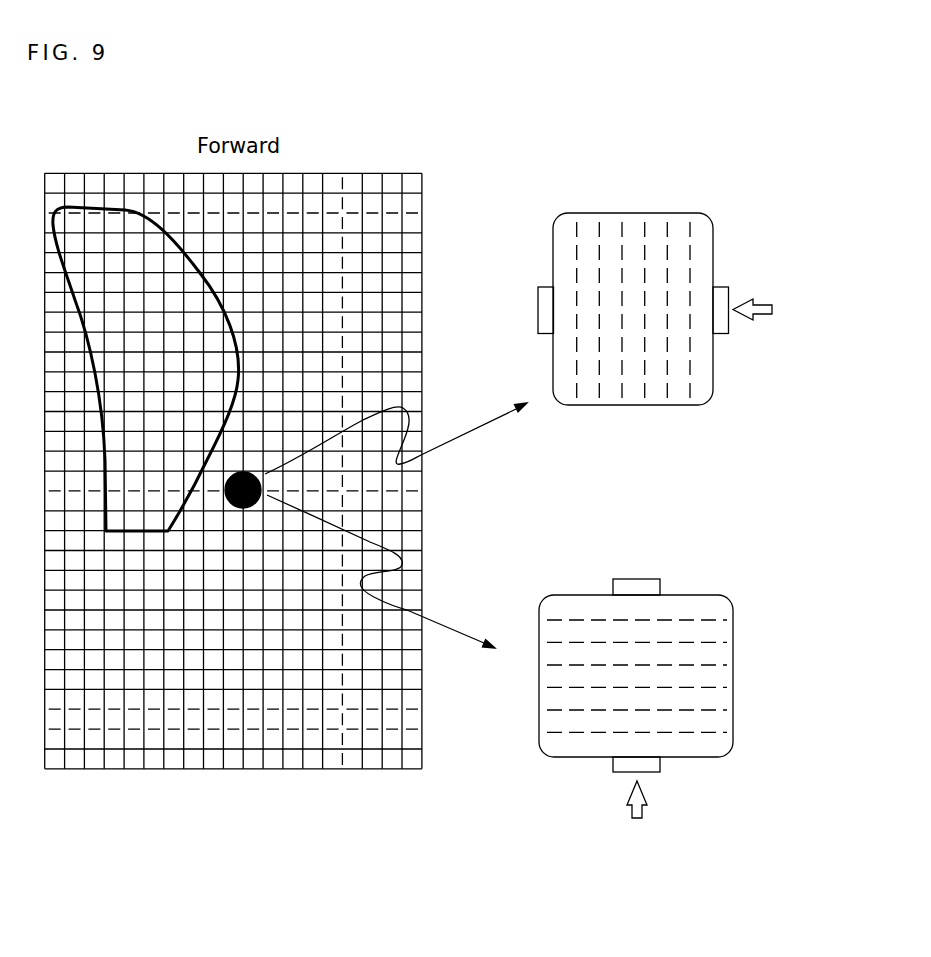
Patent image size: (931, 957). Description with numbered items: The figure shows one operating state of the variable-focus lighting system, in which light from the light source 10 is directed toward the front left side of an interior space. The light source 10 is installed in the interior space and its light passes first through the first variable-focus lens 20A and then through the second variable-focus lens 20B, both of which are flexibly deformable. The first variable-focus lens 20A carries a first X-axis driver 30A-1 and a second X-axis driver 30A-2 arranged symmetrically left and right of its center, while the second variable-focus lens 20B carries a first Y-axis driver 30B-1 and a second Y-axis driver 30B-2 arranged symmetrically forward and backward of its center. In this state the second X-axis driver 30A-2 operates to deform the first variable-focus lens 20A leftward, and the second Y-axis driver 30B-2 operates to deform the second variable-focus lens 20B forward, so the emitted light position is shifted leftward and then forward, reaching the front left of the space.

The light source 10 is at (263, 486).
The first variable-focus lens 20A is at (626, 191).
The first X-axis driver 30A-1 is at (542, 287).
The second X-axis driver 30A-2 is at (727, 287).
The second variable-focus lens 20B is at (709, 776).
The first Y-axis driver 30B-1 is at (637, 587).
The second Y-axis driver 30B-2 is at (620, 765).